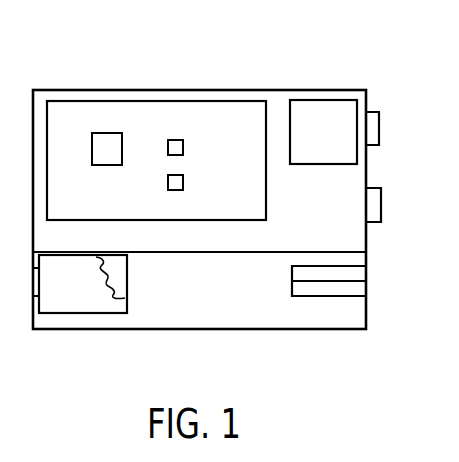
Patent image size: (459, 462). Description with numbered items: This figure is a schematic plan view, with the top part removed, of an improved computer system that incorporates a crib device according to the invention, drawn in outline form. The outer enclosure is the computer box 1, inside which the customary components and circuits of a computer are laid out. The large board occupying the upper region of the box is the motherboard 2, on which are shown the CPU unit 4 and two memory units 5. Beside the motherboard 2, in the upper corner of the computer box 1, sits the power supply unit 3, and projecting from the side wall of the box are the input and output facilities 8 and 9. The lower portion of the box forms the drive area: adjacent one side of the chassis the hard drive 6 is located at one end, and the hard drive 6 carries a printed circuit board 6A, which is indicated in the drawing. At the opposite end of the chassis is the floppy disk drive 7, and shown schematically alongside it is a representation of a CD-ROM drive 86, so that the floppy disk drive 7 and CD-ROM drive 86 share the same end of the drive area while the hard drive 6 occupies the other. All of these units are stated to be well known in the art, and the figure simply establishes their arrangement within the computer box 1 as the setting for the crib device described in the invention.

The computer box 1 is at (280, 88).
The motherboard 2 is at (71, 122).
The power supply unit 3 is at (344, 113).
The CPU unit 4 is at (110, 150).
The memory units 5 is at (178, 182).
The hard drive 6 is at (72, 303).
The printed circuit board 6A is at (132, 278).
The floppy disk drive 7 is at (356, 273).
The input and output facility 8 is at (372, 125).
The input and output facility 9 is at (372, 202).
The CD-ROM drive 86 is at (359, 289).